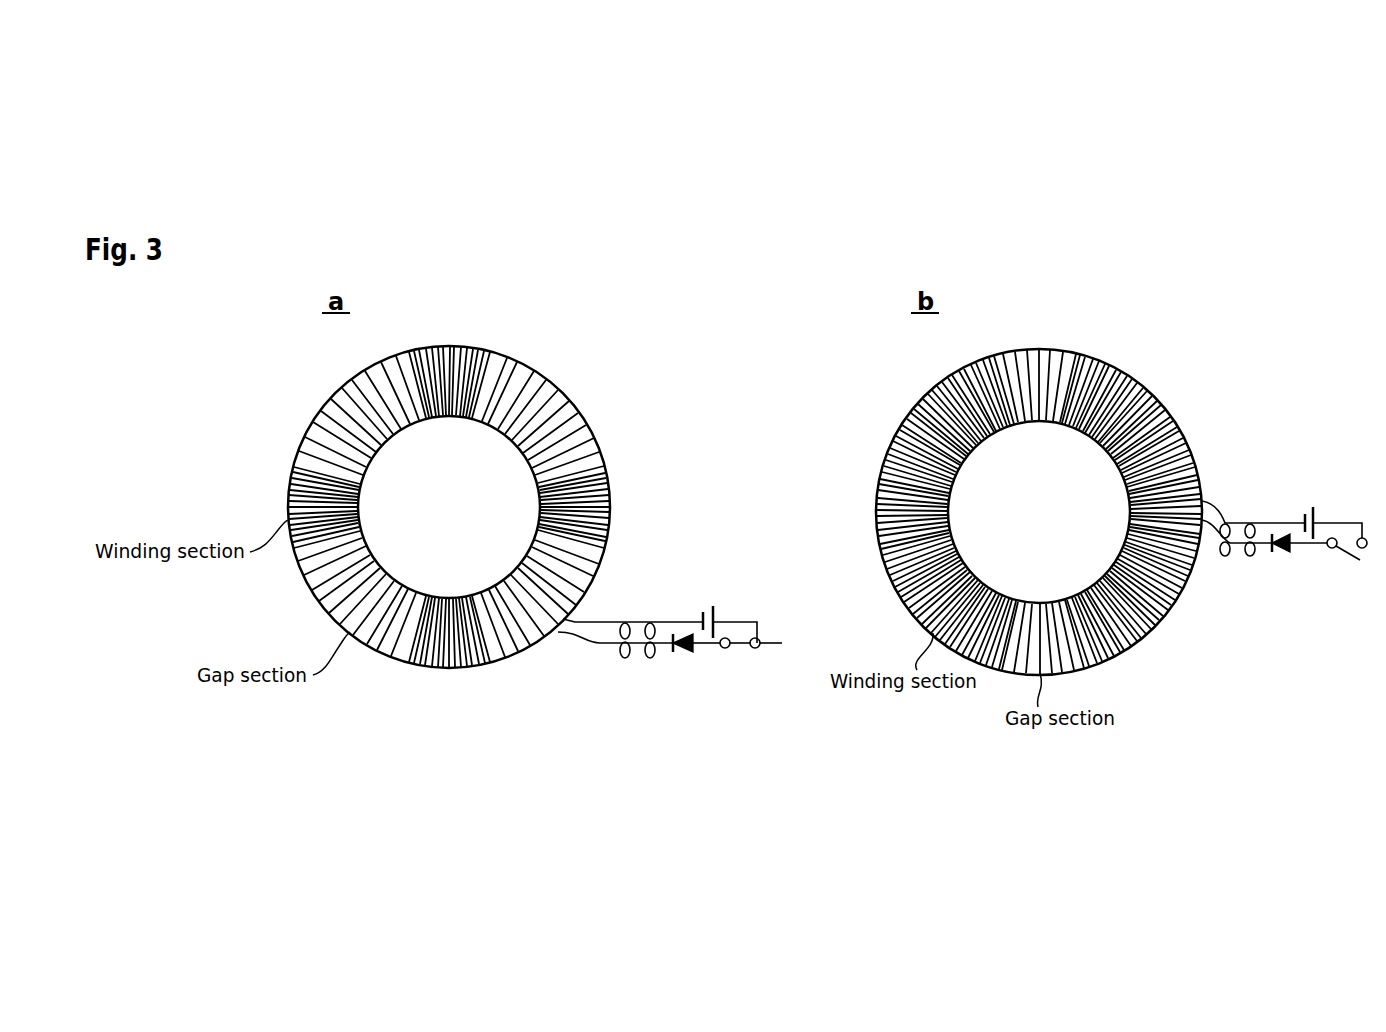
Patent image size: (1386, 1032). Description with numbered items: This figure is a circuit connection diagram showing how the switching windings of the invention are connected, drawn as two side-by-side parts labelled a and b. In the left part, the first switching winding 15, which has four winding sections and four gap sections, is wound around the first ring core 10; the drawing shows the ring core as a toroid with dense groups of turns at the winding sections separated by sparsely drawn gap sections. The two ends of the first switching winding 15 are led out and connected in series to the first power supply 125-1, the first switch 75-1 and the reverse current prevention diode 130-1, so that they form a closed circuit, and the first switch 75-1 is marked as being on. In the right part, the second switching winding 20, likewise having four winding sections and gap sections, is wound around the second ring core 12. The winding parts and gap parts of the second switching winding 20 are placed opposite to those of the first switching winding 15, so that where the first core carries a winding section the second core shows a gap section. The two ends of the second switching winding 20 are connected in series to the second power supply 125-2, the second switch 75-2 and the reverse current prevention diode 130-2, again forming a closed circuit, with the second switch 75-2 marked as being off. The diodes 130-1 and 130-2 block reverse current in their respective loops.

The first ring core 10 is at (567, 412).
The first switching winding 15 is at (610, 462).
The second ring core 12 is at (1045, 362).
The second switching winding 20 is at (1148, 392).
The first power supply 125-1 is at (705, 607).
The reverse current prevention diode 130-1 is at (683, 653).
The first switch 75-1 is at (745, 655).
The second power supply 125-2 is at (1307, 508).
The reverse current prevention diode 130-2 is at (1280, 553).
The second switch 75-2 is at (1350, 563).